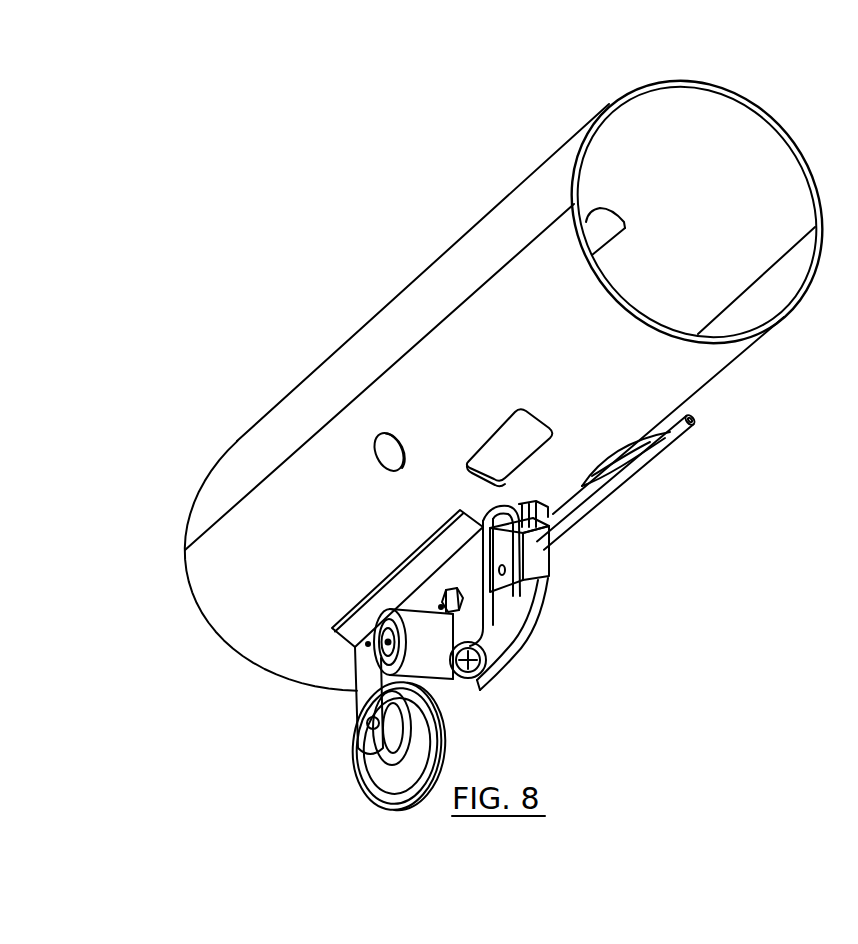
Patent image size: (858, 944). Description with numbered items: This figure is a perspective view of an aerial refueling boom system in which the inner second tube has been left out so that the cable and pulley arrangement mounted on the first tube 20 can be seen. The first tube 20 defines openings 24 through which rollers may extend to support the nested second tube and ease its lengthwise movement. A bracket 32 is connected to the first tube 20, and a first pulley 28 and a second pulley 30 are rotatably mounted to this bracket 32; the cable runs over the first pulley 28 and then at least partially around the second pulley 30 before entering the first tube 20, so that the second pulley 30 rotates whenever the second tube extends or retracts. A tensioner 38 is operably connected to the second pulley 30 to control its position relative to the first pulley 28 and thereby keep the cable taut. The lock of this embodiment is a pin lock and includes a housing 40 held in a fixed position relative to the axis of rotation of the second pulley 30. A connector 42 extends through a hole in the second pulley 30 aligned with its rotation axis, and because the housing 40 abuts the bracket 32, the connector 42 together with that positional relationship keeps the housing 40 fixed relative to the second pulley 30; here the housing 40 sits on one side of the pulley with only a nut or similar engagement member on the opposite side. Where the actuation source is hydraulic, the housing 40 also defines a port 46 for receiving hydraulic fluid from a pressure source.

The first tube 20 is at (752, 102).
The openings 24 is at (497, 437).
The first pulley 28 is at (357, 783).
The second pulley 30 is at (522, 621).
The bracket 32 is at (366, 661).
The tensioner 38 is at (667, 442).
The housing 40 is at (441, 672).
The connector 42 is at (443, 600).
The port 46 is at (453, 655).